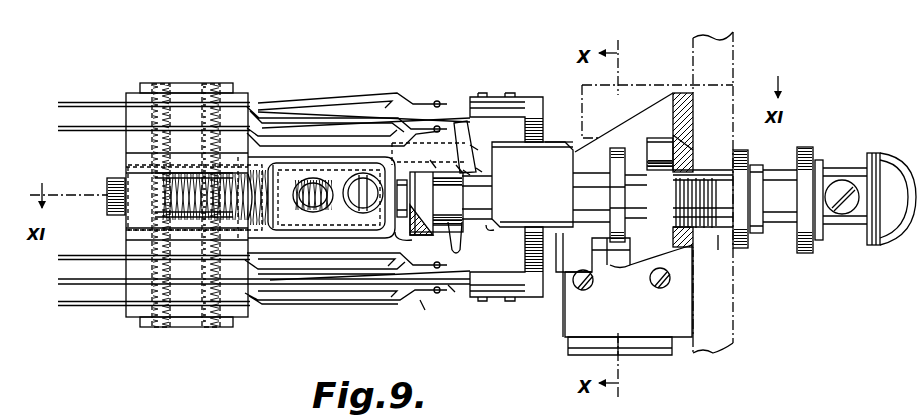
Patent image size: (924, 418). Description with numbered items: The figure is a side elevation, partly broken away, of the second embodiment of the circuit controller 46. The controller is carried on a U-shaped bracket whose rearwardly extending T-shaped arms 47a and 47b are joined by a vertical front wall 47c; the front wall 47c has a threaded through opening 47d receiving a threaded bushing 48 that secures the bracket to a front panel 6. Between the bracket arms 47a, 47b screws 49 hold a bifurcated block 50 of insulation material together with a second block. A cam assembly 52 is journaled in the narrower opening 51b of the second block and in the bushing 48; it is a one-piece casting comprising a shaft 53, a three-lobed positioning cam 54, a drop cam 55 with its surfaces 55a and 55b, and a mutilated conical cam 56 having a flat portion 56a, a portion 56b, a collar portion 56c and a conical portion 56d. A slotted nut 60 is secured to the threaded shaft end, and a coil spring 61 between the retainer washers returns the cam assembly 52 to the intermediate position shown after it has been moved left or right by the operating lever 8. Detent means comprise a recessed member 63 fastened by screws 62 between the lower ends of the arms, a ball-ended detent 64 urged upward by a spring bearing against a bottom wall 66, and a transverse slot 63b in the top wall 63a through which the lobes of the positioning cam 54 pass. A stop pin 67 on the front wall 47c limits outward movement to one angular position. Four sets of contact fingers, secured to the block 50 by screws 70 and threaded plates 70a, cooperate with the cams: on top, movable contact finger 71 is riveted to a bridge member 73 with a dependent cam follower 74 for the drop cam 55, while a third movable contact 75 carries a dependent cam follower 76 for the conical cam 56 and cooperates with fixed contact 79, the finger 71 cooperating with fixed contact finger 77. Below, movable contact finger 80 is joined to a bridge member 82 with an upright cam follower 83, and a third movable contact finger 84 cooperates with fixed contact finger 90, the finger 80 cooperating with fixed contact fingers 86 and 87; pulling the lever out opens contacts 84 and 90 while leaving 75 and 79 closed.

The front panel 6 is at (728, 53).
The operating lever 8 is at (863, 167).
The circuit controller 46 is at (163, 70).
The bracket arm 47a is at (654, 118).
The bracket arm 47b is at (272, 113).
The front wall 47c is at (682, 93).
The threaded through opening 47d is at (722, 240).
The threaded bushing 48 is at (750, 250).
The screws 49 is at (330, 205).
The block of insulation material 50 is at (237, 240).
The narrower opening 51b is at (428, 180).
The cam assembly 52 is at (558, 138).
The shaft 53 is at (632, 186).
The three-lobed positioning cam 54 is at (618, 148).
The drop cam 55 is at (560, 214).
The cam upper face 55a is at (478, 170).
The cam lower face 55b is at (488, 224).
The mutilated conical cam 56 is at (436, 203).
The flat portion 56a is at (458, 170).
The actuator lower arm 56b is at (420, 235).
The collar portion 56c is at (472, 150).
The conical portion 56d is at (463, 230).
The slotted nut 60 is at (107, 190).
The coil spring 61 is at (162, 195).
The screws 62 is at (576, 291).
The recessed member 63 is at (567, 346).
The top wall 63a is at (648, 240).
The transverse slot 63b is at (612, 258).
The ball-ended detent 64 is at (622, 255).
The bottom wall 66 is at (650, 356).
The stop pin 67 is at (686, 143).
The screws 70 is at (213, 88).
The threaded plates 70a is at (127, 175).
The movable contact finger 71 is at (466, 170).
The bridge member 73 is at (521, 100).
The dependent cam follower 74 is at (540, 122).
The third movable contact 75 is at (433, 160).
The dependent cam follower 76 is at (476, 130).
The fixed contact finger 77 is at (352, 95).
The fixed contact 79 is at (415, 106).
The movable contact finger 80 is at (452, 290).
The bridge member 82 is at (485, 290).
The upright cam follower 83 is at (556, 265).
The third movable contact finger 84 is at (405, 273).
The fixed contact finger 86 is at (462, 245).
The fixed contact finger 87 is at (423, 300).
The fixed contact finger 90 is at (356, 205).